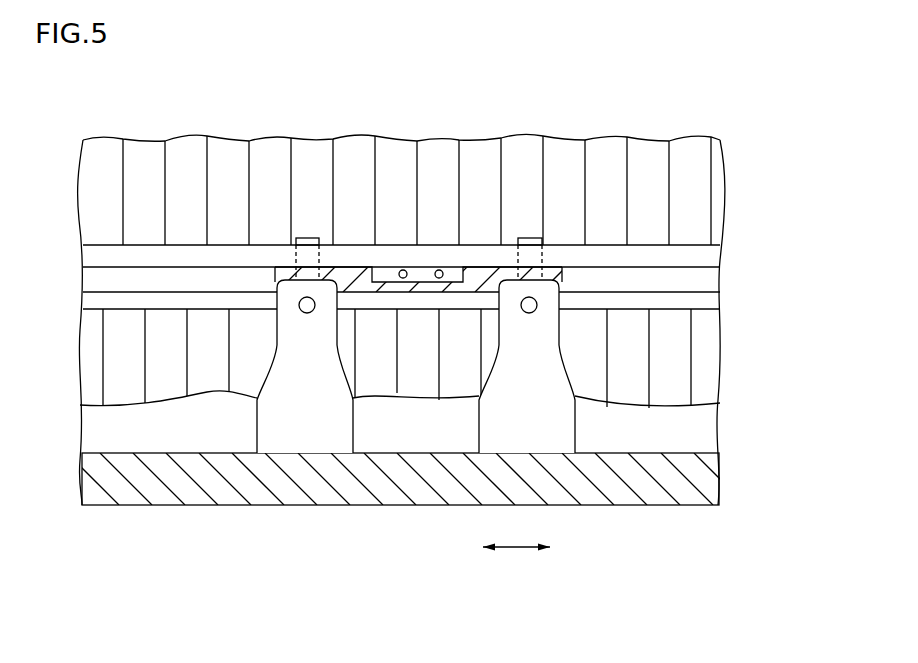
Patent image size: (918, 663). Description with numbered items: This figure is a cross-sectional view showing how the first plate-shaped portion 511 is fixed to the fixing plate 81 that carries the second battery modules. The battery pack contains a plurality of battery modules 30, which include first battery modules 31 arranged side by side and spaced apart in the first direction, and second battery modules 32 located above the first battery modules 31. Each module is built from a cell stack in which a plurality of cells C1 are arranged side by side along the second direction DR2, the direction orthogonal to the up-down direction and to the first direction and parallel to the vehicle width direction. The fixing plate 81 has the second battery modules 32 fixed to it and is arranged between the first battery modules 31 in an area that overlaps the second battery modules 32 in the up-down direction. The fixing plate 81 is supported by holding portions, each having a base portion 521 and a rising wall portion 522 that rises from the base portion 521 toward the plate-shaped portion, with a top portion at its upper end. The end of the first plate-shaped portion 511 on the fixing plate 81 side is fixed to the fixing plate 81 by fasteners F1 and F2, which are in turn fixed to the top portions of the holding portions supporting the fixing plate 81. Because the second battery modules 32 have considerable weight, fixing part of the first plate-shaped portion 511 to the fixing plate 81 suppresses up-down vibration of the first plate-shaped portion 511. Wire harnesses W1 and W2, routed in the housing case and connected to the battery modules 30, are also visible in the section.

The battery module 30 is at (431, 314).
The second battery module 32 is at (404, 156).
The first battery module 31 is at (743, 359).
The cell C1 is at (102, 177).
The fixing plate 81 is at (693, 258).
The first plate-shaped portion 511 is at (348, 275).
The fastener F1 is at (307, 237).
The fastener F2 is at (522, 238).
The wire harness W1 is at (401, 269).
The wire harness W2 is at (438, 269).
The base portion 521 is at (307, 477).
The rising wall portion 522 is at (308, 397).
The second direction DR2 is at (517, 549).